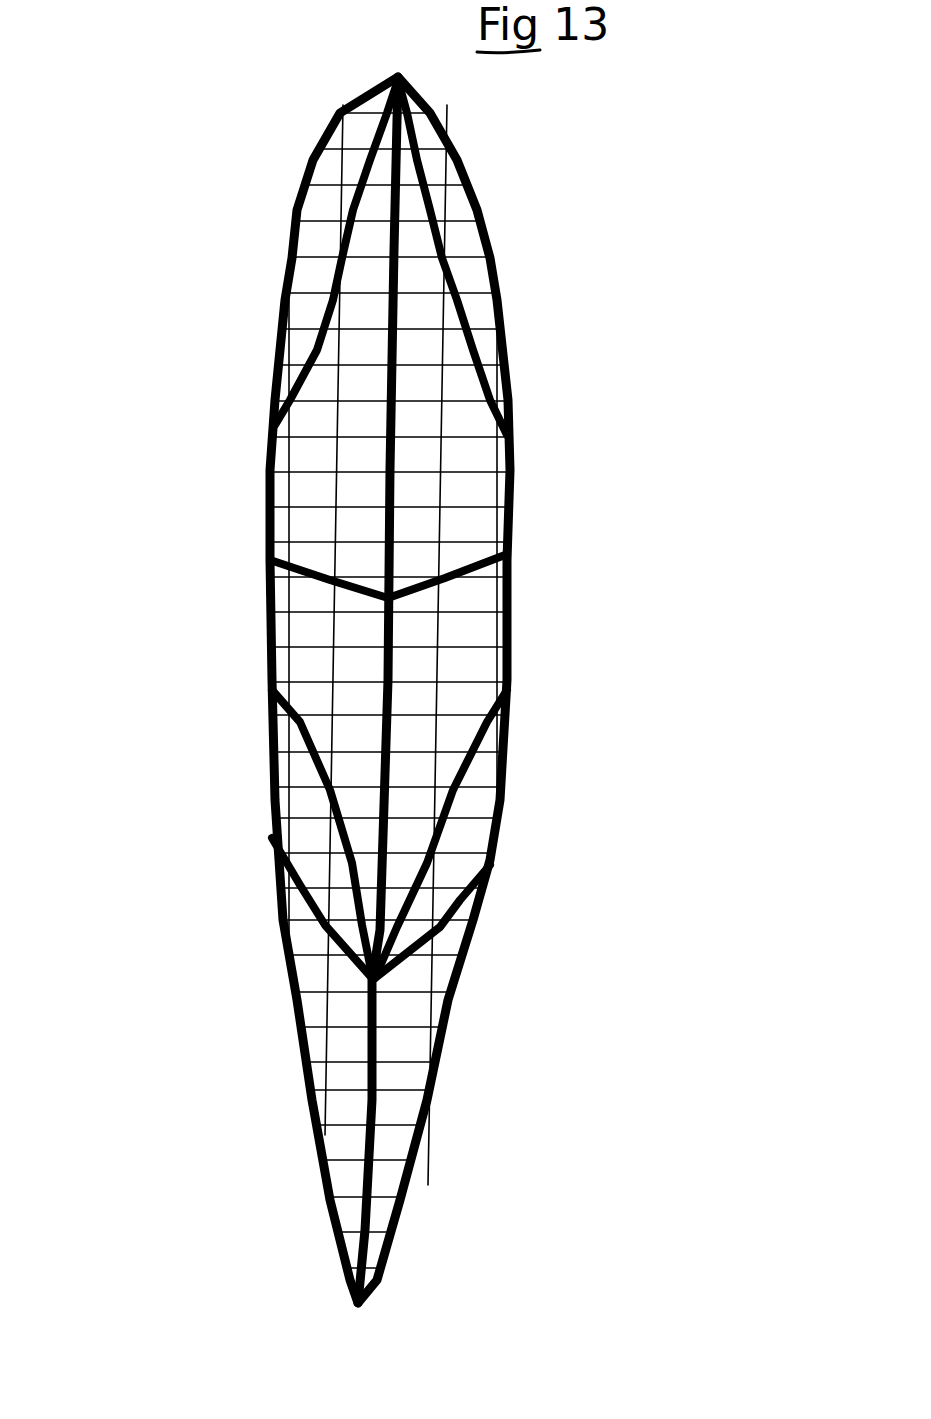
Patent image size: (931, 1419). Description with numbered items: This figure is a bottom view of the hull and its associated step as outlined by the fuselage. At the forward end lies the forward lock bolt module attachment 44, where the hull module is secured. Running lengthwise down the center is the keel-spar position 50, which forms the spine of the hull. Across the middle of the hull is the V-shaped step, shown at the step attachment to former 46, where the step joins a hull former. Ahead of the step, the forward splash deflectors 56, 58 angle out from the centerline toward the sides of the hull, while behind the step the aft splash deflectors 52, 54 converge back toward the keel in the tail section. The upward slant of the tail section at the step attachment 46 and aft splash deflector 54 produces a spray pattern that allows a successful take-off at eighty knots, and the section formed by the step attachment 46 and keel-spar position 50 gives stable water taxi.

The forward lock bolt module attachment 44 is at (390, 80).
The step attachment to former 46 is at (513, 553).
The keel-spar position 50 is at (398, 548).
The aft splash deflector 52 is at (370, 988).
The aft splash deflector 54 is at (390, 1000).
The forward splash deflector 56 is at (325, 323).
The forward splash deflector 58 is at (467, 312).